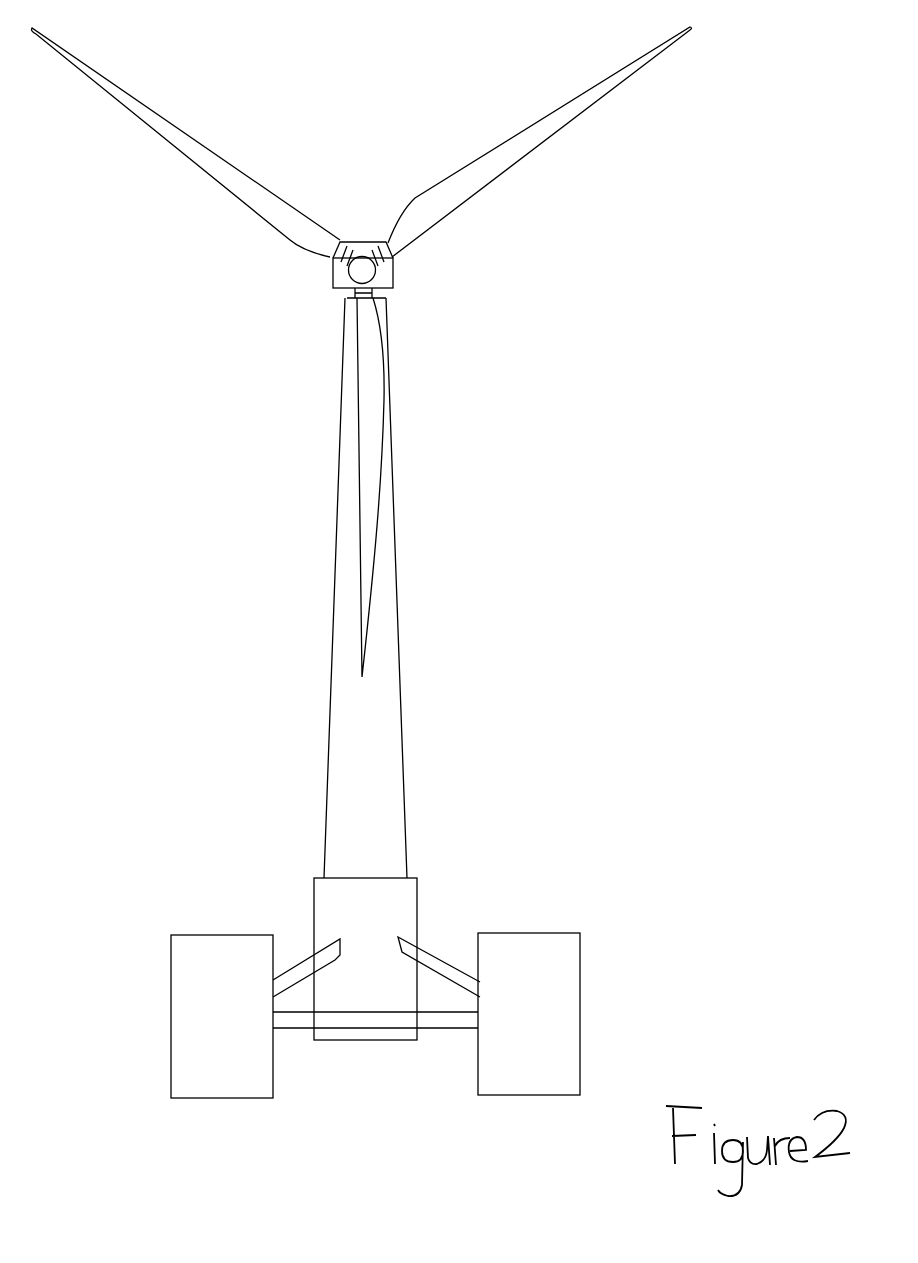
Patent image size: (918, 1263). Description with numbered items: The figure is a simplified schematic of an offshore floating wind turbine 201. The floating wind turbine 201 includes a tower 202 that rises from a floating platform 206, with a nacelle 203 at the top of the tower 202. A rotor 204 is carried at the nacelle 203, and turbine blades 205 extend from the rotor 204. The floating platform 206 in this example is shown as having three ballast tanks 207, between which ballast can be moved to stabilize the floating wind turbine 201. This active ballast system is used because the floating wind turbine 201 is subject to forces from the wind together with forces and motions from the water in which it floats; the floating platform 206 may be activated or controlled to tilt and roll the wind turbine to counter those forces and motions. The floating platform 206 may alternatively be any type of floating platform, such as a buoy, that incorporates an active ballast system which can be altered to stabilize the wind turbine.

The floating wind turbine 201 is at (19, 26).
The tower 202 is at (421, 588).
The nacelle 203 is at (419, 270).
The rotor 204 is at (302, 305).
The turbine blades 205 is at (19, 26).
The floating platform 206 is at (375, 973).
The ballast tanks 207 is at (375, 973).